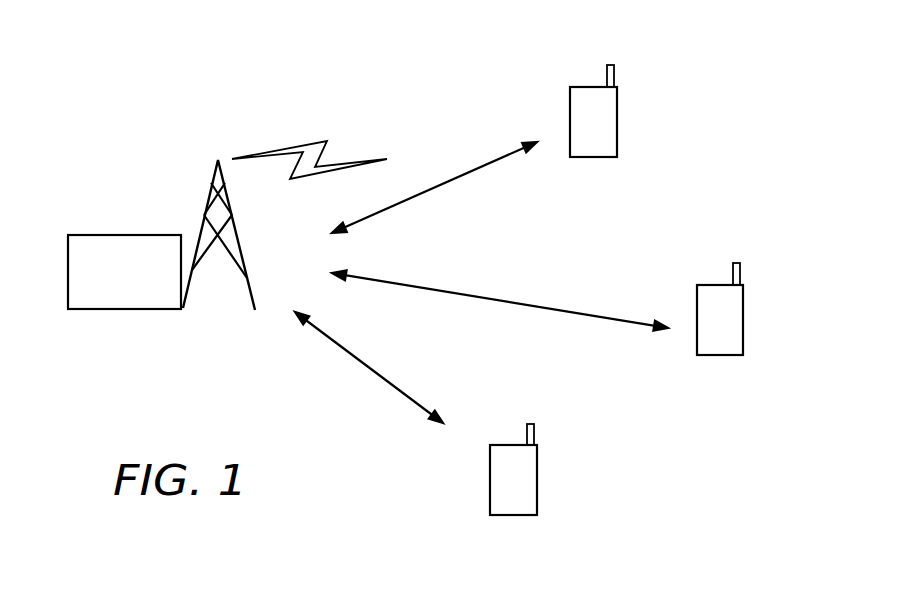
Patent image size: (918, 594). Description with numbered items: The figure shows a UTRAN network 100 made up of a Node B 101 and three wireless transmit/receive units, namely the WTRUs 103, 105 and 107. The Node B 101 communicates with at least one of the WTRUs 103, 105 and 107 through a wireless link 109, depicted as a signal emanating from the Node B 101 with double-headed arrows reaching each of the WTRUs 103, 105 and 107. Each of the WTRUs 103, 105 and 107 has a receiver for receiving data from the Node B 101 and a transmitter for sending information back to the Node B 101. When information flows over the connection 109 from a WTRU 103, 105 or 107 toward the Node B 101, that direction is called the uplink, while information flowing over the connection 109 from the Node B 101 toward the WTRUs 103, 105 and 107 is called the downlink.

The UTRAN network 100 is at (242, 102).
The Node B 101 is at (148, 235).
The WTRU 103 is at (618, 132).
The WTRU 105 is at (744, 328).
The WTRU 107 is at (565, 475).
The wireless link 109 is at (325, 140).